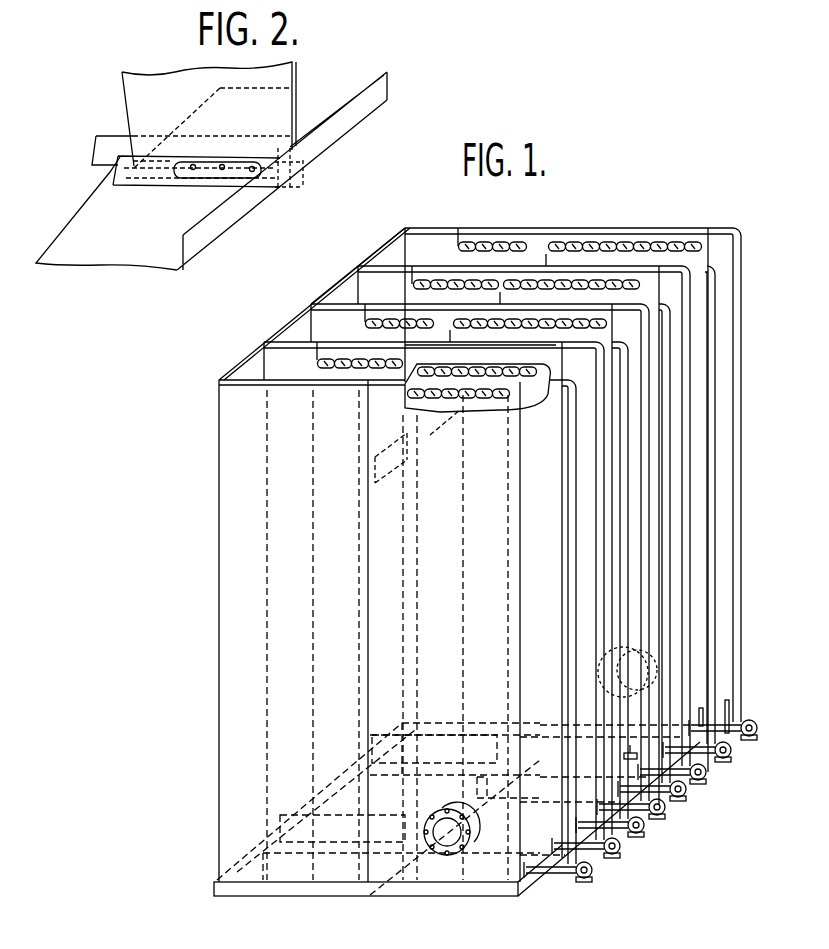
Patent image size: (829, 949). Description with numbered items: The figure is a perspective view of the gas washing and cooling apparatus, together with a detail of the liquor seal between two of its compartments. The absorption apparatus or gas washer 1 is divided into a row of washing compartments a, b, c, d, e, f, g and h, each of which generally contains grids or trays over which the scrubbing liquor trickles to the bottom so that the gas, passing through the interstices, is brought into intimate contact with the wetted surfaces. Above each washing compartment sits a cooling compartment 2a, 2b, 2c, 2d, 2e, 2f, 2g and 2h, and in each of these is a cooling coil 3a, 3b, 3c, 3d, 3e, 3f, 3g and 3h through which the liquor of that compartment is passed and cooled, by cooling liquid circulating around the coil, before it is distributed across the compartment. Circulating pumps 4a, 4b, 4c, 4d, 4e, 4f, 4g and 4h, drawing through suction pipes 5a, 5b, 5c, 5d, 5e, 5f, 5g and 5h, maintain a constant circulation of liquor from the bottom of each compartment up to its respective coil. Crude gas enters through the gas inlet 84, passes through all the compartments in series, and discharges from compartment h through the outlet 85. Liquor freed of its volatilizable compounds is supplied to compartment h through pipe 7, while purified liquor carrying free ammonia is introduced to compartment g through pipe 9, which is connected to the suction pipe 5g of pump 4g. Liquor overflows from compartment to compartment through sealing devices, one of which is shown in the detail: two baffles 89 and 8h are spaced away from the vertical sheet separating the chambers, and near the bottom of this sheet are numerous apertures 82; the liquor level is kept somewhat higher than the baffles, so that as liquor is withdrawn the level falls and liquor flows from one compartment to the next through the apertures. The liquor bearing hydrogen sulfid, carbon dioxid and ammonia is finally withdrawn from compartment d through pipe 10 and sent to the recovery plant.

In FIG. 1, the absorption apparatus 1 is at (420, 896).
In FIG. 1, the compartment a is at (468, 612).
In FIG. 1, the compartment b is at (264, 342).
In FIG. 1, the compartment c is at (311, 304).
In FIG. 1, the compartment d is at (593, 569).
In FIG. 1, the compartment e is at (640, 535).
In FIG. 1, the compartment f is at (358, 266).
In FIG. 2, the compartment g is at (225, 195).
In FIG. 1, the compartment g is at (405, 228).
In FIG. 2, the compartment h is at (302, 128).
In FIG. 1, the compartment h is at (708, 228).
In FIG. 1, the cooling compartment 2a is at (475, 362).
In FIG. 1, the cooling compartment 2b is at (390, 363).
In FIG. 1, the cooling compartment 2c is at (461, 323).
In FIG. 1, the cooling compartment 2d is at (441, 335).
In FIG. 1, the cooling compartment 2e is at (493, 292).
In FIG. 1, the cooling compartment 2f is at (508, 285).
In FIG. 1, the cooling compartment 2g is at (556, 239).
In FIG. 1, the cooling compartment 2h is at (537, 254).
In FIG. 1, the cooling coil 3a is at (462, 410).
In FIG. 1, the cooling coil 3b is at (348, 357).
In FIG. 1, the cooling coil 3c is at (387, 317).
In FIG. 1, the cooling coil 3d is at (533, 330).
In FIG. 1, the cooling coil 3e is at (582, 291).
In FIG. 1, the cooling coil 3f is at (443, 279).
In FIG. 1, the cooling coil 3g is at (481, 241).
In FIG. 1, the cooling coil 3h is at (628, 253).
In FIG. 1, the circulating pump 4a is at (590, 882).
In FIG. 1, the circulating pump 4b is at (620, 855).
In FIG. 1, the circulating pump 4c is at (665, 816).
In FIG. 1, the circulating pump 4d is at (644, 834).
In FIG. 1, the circulating pump 4e is at (686, 798).
In FIG. 1, the circulating pump 4f is at (706, 781).
In FIG. 1, the circulating pump 4g is at (757, 731).
In FIG. 1, the circulating pump 4h is at (731, 759).
In FIG. 1, the suction pipe 5a is at (552, 874).
In FIG. 1, the suction pipe 5b is at (600, 851).
In FIG. 1, the suction pipe 5c is at (646, 812).
In FIG. 1, the suction pipe 5d is at (624, 830).
In FIG. 1, the suction pipe 5e is at (668, 794).
In FIG. 1, the suction pipe 5f is at (690, 777).
In FIG. 1, the suction pipe 5g is at (748, 738).
In FIG. 1, the suction pipe 5h is at (716, 756).
In FIG. 1, the pipe 7 is at (697, 707).
In FIG. 1, the pipe 9 is at (726, 706).
In FIG. 1, the pipe 10 is at (634, 744).
In FIG. 1, the gas inlet 84 is at (446, 855).
In FIG. 1, the outlet 85 is at (660, 665).
In FIG. 2, the apertures 82 is at (252, 166).
In FIG. 2, the baffle 89 is at (167, 180).
In FIG. 2, the baffle 8h is at (307, 135).